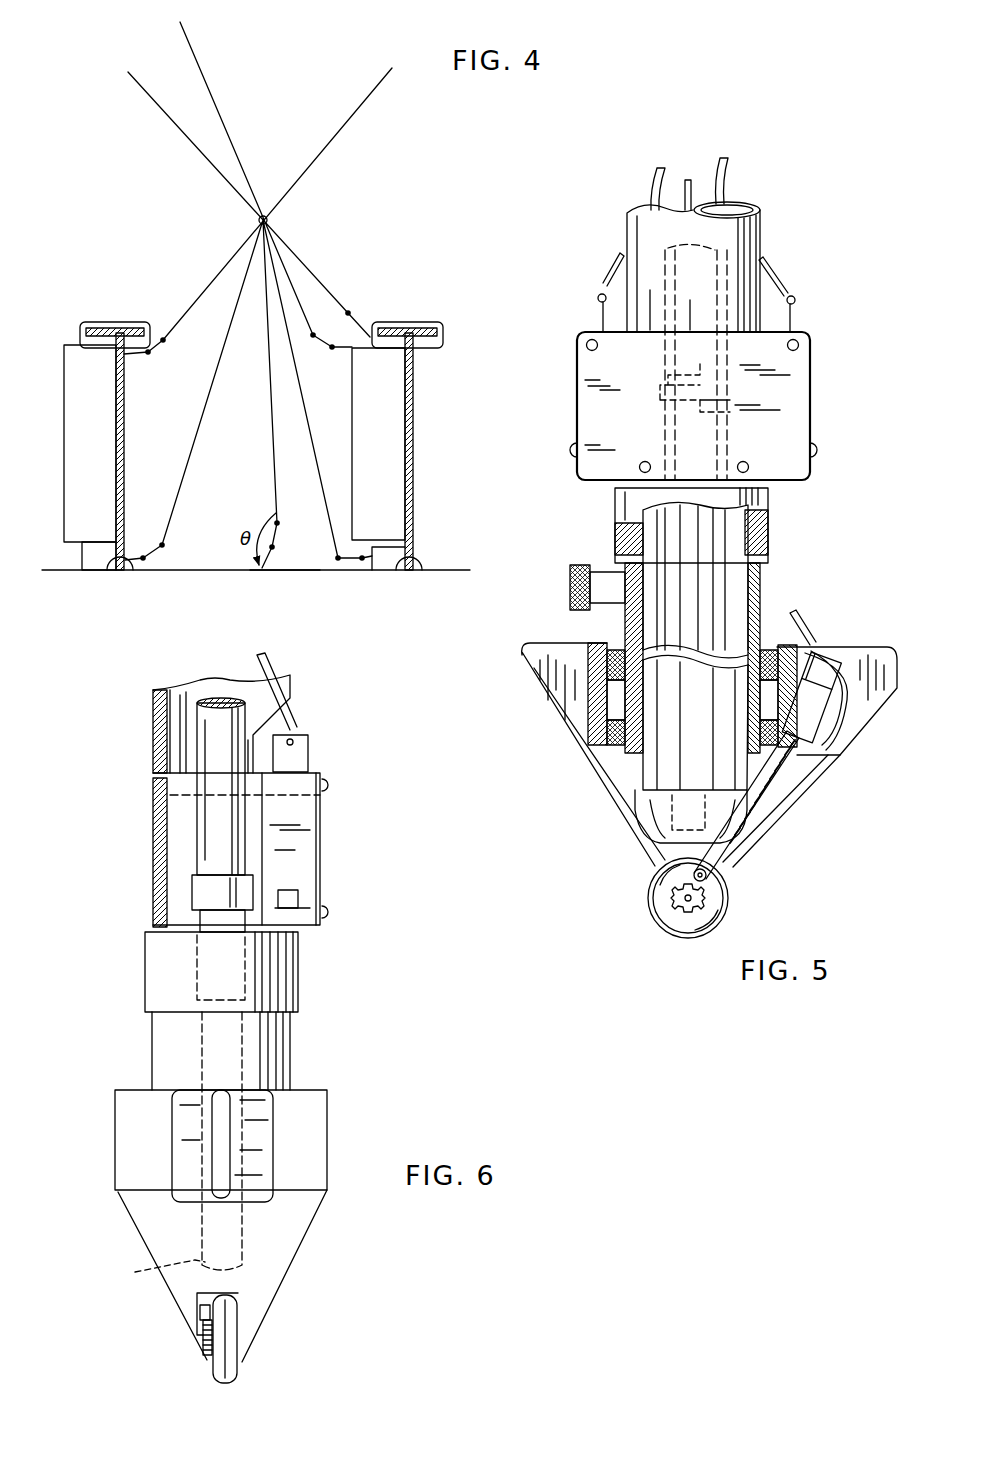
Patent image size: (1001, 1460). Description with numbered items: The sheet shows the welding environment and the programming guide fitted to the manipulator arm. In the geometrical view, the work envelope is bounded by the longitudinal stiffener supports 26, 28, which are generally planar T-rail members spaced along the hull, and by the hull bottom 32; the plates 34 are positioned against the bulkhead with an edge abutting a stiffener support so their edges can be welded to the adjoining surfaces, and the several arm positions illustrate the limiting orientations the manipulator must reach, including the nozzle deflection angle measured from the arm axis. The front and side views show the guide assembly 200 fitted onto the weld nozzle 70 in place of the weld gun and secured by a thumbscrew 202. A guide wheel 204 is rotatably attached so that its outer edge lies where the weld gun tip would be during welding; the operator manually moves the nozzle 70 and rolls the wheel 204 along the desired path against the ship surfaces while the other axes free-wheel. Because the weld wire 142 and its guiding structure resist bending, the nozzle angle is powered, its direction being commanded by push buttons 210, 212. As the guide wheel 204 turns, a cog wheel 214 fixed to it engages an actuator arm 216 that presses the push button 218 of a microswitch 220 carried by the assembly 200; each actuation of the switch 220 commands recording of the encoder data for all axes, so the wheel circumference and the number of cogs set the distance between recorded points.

In FIG. 4, the longitudinal stiffener support 26 is at (413, 462).
In FIG. 4, the longitudinal stiffener support 28 is at (116, 405).
In FIG. 4, the hull 32 is at (293, 571).
In FIG. 4, the plate 34 is at (375, 413).
In FIG. 5, the weld nozzle 70 is at (752, 277).
In FIG. 6, the weld nozzle 70 is at (153, 718).
In FIG. 5, the weld wire 142 is at (705, 604).
In FIG. 5, the guide assembly 200 is at (620, 622).
In FIG. 6, the guide assembly 200 is at (300, 973).
In FIG. 5, the thumbscrew 202 is at (583, 562).
In FIG. 5, the guide wheel 204 is at (655, 912).
In FIG. 6, the guide wheel 204 is at (238, 1373).
In FIG. 5, the push button 210 is at (563, 448).
In FIG. 5, the push button 212 is at (823, 456).
In FIG. 6, the push button 212 is at (300, 896).
In FIG. 5, the cog wheel 214 is at (700, 901).
In FIG. 6, the cog wheel 214 is at (205, 1350).
In FIG. 5, the actuator arm 216 is at (755, 812).
In FIG. 6, the actuator arm 216 is at (147, 1273).
In FIG. 5, the push button 218 is at (827, 757).
In FIG. 5, the microswitch 220 is at (825, 710).